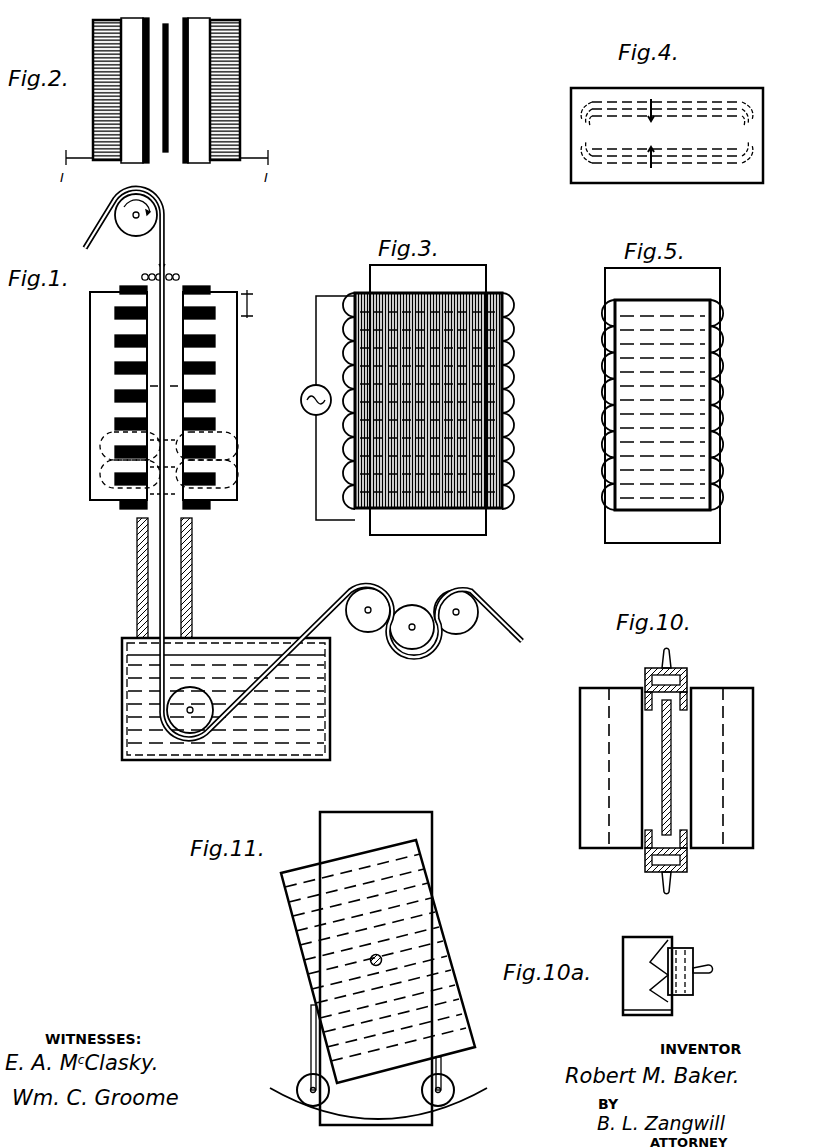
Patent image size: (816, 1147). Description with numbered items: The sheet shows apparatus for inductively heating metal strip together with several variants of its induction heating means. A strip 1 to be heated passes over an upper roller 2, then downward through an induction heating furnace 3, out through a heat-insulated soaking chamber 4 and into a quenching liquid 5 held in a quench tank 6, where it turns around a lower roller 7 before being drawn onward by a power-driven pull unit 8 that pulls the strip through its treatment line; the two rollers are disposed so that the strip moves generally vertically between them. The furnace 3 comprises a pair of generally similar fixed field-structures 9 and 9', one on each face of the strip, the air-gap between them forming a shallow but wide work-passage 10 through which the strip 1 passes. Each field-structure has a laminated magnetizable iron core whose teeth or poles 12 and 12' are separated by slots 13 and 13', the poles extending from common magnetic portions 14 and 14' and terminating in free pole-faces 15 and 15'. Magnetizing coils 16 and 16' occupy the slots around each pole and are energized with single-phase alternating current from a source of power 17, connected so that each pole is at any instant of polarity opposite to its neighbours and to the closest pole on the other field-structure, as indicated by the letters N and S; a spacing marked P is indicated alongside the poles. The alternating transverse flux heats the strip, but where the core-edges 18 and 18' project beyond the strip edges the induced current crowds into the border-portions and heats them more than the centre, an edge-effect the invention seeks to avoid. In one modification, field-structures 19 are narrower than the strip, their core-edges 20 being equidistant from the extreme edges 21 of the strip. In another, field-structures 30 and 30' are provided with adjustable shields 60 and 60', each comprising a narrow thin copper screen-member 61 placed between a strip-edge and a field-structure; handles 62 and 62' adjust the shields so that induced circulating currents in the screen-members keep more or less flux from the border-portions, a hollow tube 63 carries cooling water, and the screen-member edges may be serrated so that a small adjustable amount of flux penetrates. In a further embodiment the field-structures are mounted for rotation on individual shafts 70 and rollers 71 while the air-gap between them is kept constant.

In FIG. 2, the strip 1 is at (165, 36).
In FIG. 1, the strip 1 is at (168, 245).
In FIG. 3, the strip 1 is at (492, 272).
In FIG. 4, the strip 1 is at (648, 88).
In FIG. 5, the strip 1 is at (720, 275).
In FIG. 10, the strip 1 is at (672, 770).
In FIG. 10A, the strip 1 is at (645, 1018).
In FIG. 11, the strip 1 is at (424, 816).
In FIG. 1, the roller 2 is at (124, 232).
In FIG. 1, the induction heating furnace 3 is at (262, 393).
In FIG. 3, the induction heating furnace 3 is at (306, 481).
In FIG. 1, the heat-insulated soaking chamber 4 is at (193, 576).
In FIG. 1, the quenching liquid 5 is at (329, 707).
In FIG. 1, the quench tank 6 is at (329, 741).
In FIG. 1, the roller 7 is at (200, 699).
In FIG. 1, the pull unit 8 is at (414, 607).
In FIG. 2, the field-structure 9 is at (90, 90).
In FIG. 1, the field-structure 9 is at (110, 396).
In FIG. 2, the field-structure 9' is at (238, 90).
In FIG. 1, the field-structure 9' is at (220, 396).
In FIG. 3, the field-structure 9' is at (446, 400).
In FIG. 2, the work-passage 10 is at (166, 160).
In FIG. 1, the work-passage 10 is at (145, 279).
In FIG. 1, the teeth or poles 12 is at (99, 396).
In FIG. 1, the teeth or poles 12' is at (227, 399).
In FIG. 1, the slots 13 is at (100, 316).
In FIG. 1, the slots 13' is at (226, 324).
In FIG. 1, the common magnetic portion 14 is at (99, 400).
In FIG. 1, the common magnetic portion 14' is at (225, 354).
In FIG. 3, the common magnetic portion 14' is at (350, 533).
In FIG. 1, the pole-faces 15 is at (153, 349).
In FIG. 1, the pole-faces 15' is at (175, 349).
In FIG. 2, the magnetizing coils 16 is at (130, 103).
In FIG. 1, the magnetizing coils 16 is at (116, 398).
In FIG. 2, the magnetizing coils 16' is at (205, 103).
In FIG. 1, the magnetizing coils 16' is at (213, 398).
In FIG. 3, the magnetizing coils 16' is at (444, 401).
In FIG. 5, the magnetizing coils 16' is at (682, 405).
In FIG. 3, the source of power 17 is at (307, 410).
In FIG. 2, the core-edges 18 is at (81, 99).
In FIG. 2, the core-edges 18' is at (253, 99).
In FIG. 3, the core-edges 18' is at (419, 415).
In FIG. 5, the field-structures 19 is at (708, 368).
In FIG. 5, the core-edges 20 is at (706, 345).
In FIG. 5, the extreme edges 21 is at (720, 288).
In FIG. 10, the field-structure 30 is at (589, 768).
In FIG. 10A, the field-structure 30 is at (666, 980).
In FIG. 10, the field-structure 30' is at (738, 768).
In FIG. 10, the shield 60 is at (681, 869).
In FIG. 10, the shield 60' is at (680, 668).
In FIG. 10A, the shield 60' is at (696, 968).
In FIG. 10, the screen-member 61 is at (645, 715).
In FIG. 10A, the screen-member 61 is at (670, 940).
In FIG. 10, the handle 62 is at (686, 891).
In FIG. 10, the handle 62' is at (635, 657).
In FIG. 10A, the handle 62' is at (724, 962).
In FIG. 10, the hollow tube 63 is at (687, 678).
In FIG. 10A, the hollow tube 63 is at (693, 994).
In FIG. 11, the shafts 70 is at (370, 958).
In FIG. 11, the rollers 71 is at (300, 1083).
In FIG. 1, the pitch P is at (247, 304).